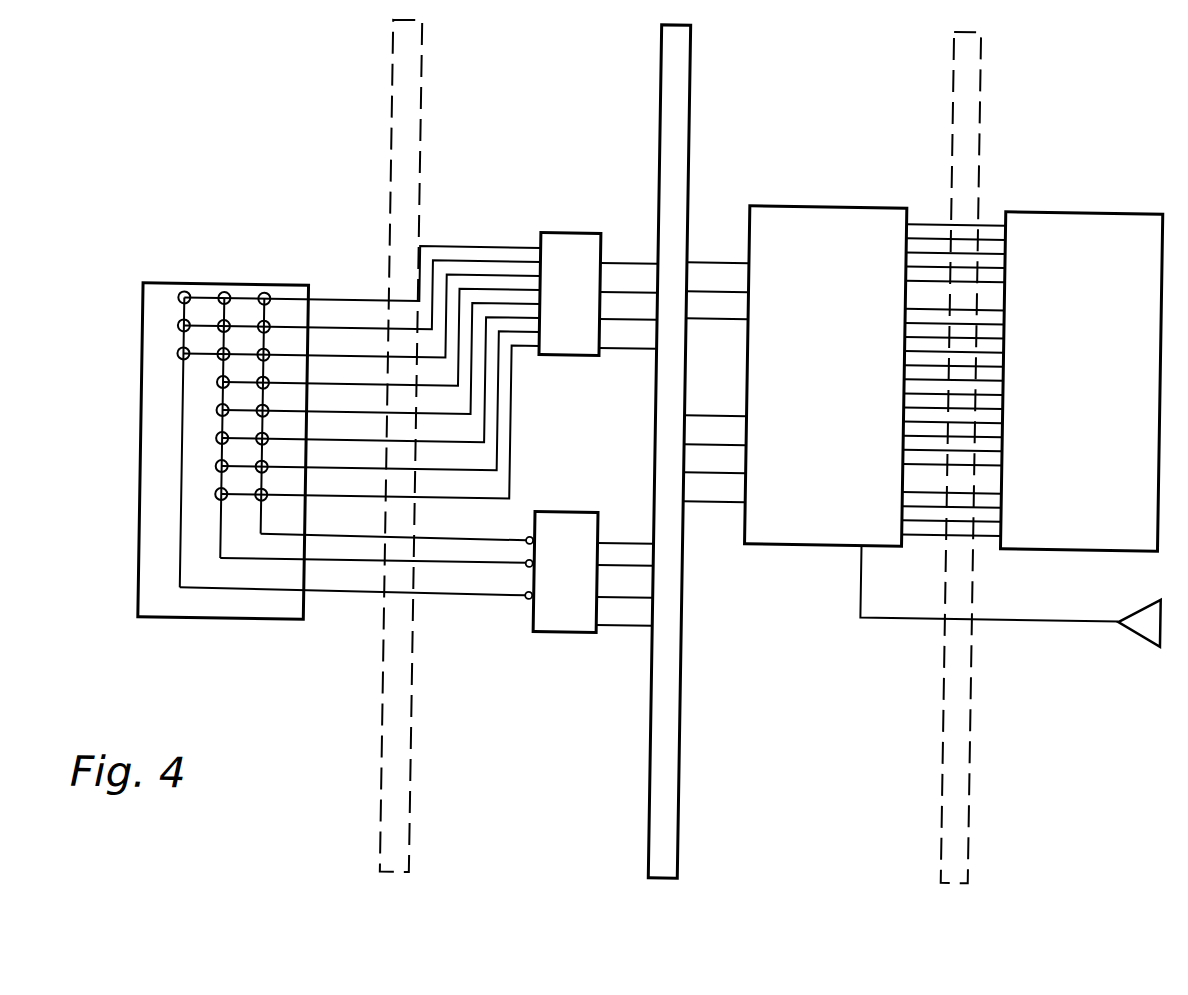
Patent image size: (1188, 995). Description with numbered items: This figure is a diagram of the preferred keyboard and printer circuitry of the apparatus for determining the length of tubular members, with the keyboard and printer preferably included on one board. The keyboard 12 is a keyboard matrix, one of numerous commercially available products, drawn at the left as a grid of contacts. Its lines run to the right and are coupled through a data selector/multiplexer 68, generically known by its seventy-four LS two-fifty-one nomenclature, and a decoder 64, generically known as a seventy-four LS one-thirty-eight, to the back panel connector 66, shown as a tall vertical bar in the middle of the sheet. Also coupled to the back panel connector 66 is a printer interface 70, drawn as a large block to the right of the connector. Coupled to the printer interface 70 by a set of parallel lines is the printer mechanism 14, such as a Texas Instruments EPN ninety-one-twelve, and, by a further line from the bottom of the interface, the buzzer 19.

The keyboard 12 is at (153, 291).
The data selector/multiplexer 68 is at (571, 337).
The decoder 64 is at (580, 620).
The back panel connector 66 is at (675, 752).
The printer interface 70 is at (832, 434).
The printer mechanism 14 is at (1093, 436).
The buzzer 19 is at (1141, 633).